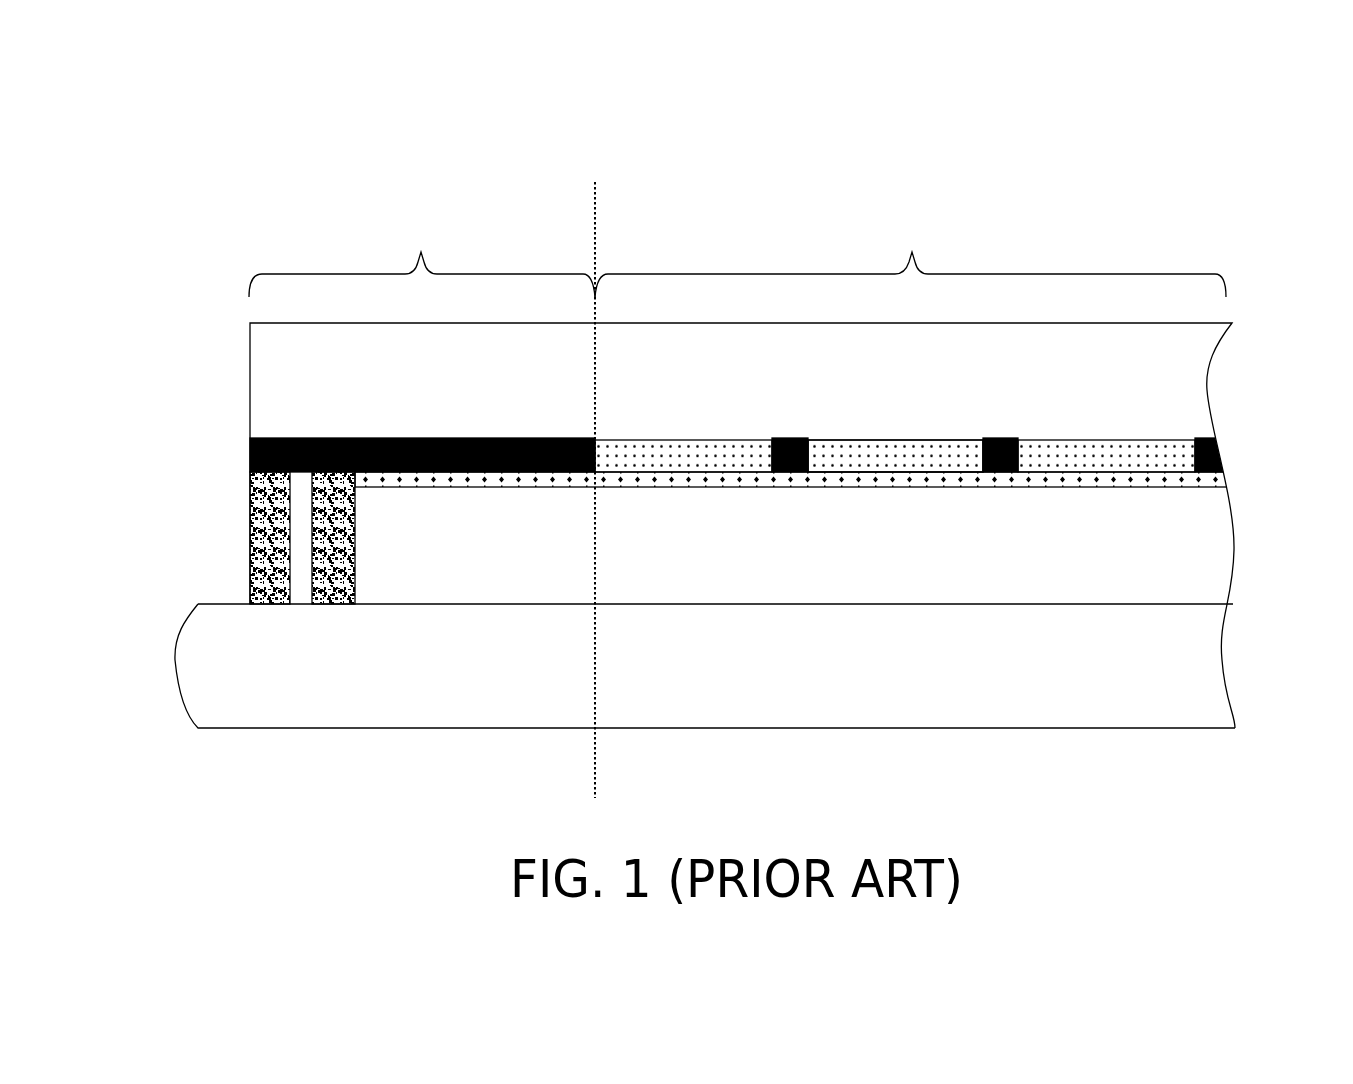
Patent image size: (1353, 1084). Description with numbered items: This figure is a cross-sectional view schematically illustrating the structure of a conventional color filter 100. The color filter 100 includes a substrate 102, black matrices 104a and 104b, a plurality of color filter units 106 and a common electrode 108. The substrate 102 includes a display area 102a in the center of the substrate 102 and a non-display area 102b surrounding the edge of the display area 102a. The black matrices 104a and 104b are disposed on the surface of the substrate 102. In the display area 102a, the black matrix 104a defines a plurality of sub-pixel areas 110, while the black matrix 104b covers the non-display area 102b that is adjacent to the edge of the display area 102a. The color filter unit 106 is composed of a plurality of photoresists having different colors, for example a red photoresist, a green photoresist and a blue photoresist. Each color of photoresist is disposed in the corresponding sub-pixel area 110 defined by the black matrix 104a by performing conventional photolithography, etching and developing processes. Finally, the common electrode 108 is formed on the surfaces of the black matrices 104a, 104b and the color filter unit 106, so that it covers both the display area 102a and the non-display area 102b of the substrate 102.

The color filter 100 is at (706, 462).
The substrate 102 is at (1183, 383).
The display area 102a is at (912, 252).
The non-display area 102b is at (421, 252).
The black matrix 104a is at (1217, 455).
The black matrix 104b is at (250, 453).
The color filter unit 106 is at (960, 455).
The common electrode 108 is at (1185, 487).
The sub-pixel area 110 is at (1070, 428).